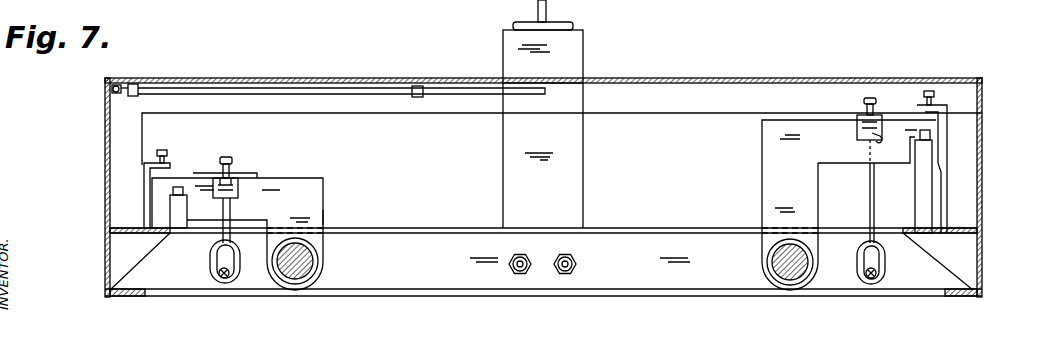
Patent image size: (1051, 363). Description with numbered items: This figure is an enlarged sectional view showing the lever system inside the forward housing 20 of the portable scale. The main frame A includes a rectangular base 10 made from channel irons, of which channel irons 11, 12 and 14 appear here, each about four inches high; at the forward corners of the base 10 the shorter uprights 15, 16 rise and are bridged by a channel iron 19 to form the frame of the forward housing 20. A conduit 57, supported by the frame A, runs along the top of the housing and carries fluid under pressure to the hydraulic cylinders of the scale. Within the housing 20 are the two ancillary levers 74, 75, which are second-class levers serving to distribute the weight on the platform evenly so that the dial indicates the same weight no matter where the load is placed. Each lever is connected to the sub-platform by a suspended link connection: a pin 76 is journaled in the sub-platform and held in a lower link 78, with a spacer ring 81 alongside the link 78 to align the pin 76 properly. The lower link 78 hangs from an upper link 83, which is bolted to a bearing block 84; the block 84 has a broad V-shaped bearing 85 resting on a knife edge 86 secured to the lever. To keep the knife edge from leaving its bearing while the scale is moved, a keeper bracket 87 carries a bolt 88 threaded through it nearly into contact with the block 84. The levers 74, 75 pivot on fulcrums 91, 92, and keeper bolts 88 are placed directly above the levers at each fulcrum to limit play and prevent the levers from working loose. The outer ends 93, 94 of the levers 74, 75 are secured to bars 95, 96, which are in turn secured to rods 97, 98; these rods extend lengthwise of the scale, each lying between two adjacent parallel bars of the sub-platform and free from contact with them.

The rectangular base 10 is at (982, 296).
The channel iron 11 is at (640, 283).
The channel iron 12 is at (982, 262).
The channel iron 14 is at (105, 260).
The upright 15 is at (982, 160).
The upright 16 is at (105, 193).
The channel iron 19 is at (388, 81).
The forward housing 20 is at (981, 79).
The conduit 57 is at (346, 94).
The ancillary lever 74 is at (779, 171).
The ancillary lever 75 is at (297, 203).
The pin 76 is at (223, 280).
The lower link 78 is at (210, 258).
The spacer ring 81 is at (219, 273).
The upper link 83 is at (231, 214).
The bearing block 84 is at (234, 177).
The V-shaped bearing 85 is at (880, 135).
The knife edge 86 is at (876, 141).
The bracket 87 is at (146, 165).
The bolt 88 is at (166, 157).
The fulcrum 91 is at (932, 148).
The fulcrum 92 is at (175, 207).
The outer end 93 is at (762, 133).
The outer end 94 is at (295, 179).
The bar 95 is at (762, 205).
The bar 96 is at (323, 218).
The rod 97 is at (782, 268).
The rod 98 is at (305, 262).
The main frame A is at (107, 127).